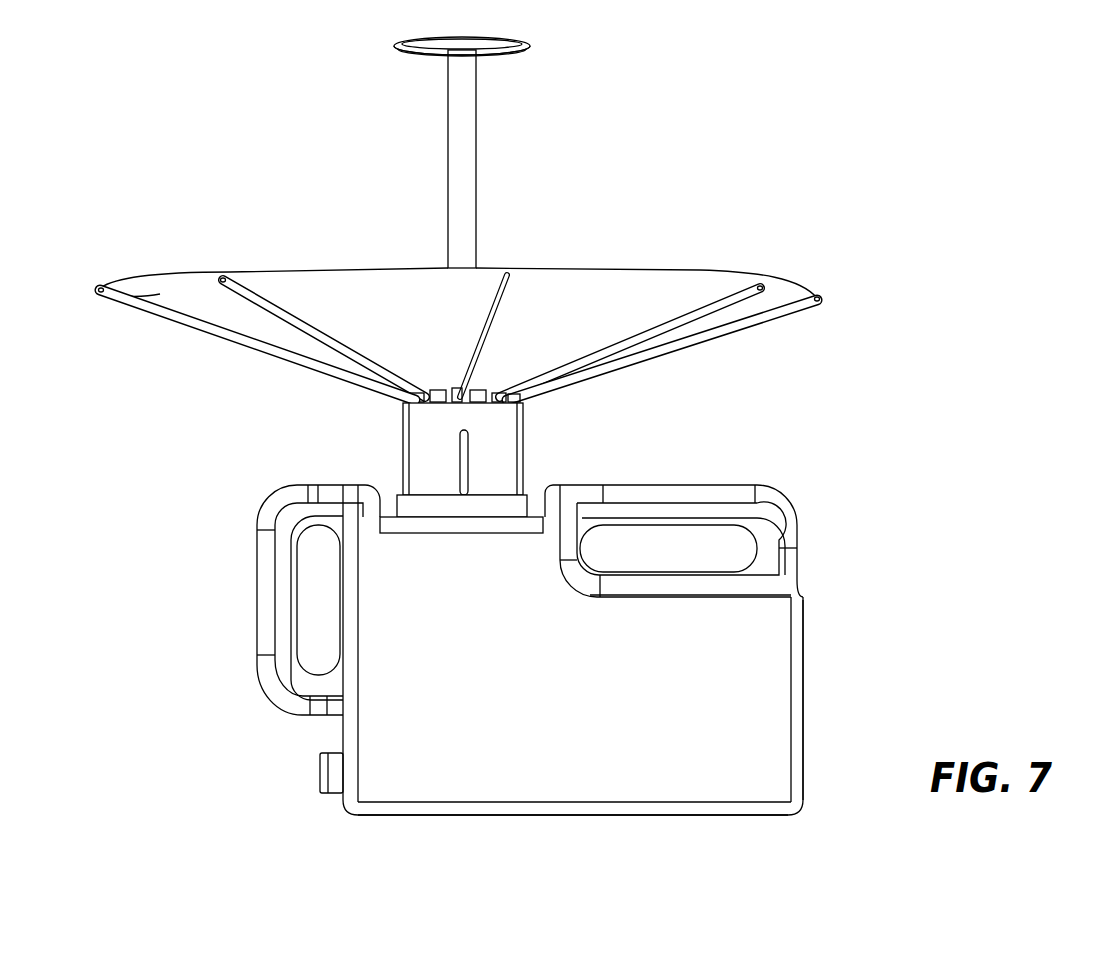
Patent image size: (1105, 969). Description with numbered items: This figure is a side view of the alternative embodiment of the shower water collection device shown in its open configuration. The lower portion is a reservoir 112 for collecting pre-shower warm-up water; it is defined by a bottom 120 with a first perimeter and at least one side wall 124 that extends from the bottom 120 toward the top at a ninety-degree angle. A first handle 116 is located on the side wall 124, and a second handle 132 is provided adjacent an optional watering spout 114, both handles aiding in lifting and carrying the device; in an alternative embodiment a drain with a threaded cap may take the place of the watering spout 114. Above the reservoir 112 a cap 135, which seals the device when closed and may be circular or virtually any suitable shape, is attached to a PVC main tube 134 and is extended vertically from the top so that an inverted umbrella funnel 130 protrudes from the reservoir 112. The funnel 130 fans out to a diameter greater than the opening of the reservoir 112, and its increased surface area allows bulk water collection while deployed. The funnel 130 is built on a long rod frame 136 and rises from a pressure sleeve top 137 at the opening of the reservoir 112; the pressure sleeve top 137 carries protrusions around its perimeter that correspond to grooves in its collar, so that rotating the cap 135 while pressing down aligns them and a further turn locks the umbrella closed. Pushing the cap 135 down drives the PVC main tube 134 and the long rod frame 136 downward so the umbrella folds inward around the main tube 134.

The reservoir 112 is at (594, 699).
The watering spout 114 is at (318, 770).
The first handle 116 is at (690, 500).
The bottom 120 is at (585, 818).
The side wall 124 is at (812, 698).
The inverted umbrella funnel 130 is at (335, 268).
The second handle 132 is at (257, 571).
The PVC main tube 134 is at (478, 185).
The cap 135 is at (530, 49).
The long rod frame 136 is at (155, 335).
The pressure sleeve top 137 is at (395, 455).